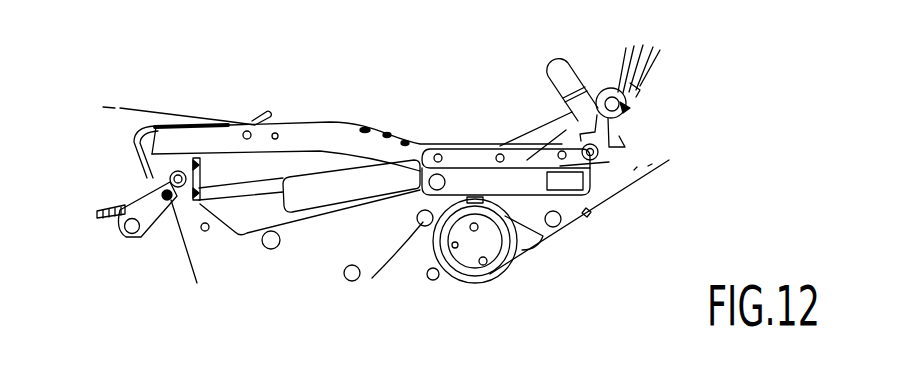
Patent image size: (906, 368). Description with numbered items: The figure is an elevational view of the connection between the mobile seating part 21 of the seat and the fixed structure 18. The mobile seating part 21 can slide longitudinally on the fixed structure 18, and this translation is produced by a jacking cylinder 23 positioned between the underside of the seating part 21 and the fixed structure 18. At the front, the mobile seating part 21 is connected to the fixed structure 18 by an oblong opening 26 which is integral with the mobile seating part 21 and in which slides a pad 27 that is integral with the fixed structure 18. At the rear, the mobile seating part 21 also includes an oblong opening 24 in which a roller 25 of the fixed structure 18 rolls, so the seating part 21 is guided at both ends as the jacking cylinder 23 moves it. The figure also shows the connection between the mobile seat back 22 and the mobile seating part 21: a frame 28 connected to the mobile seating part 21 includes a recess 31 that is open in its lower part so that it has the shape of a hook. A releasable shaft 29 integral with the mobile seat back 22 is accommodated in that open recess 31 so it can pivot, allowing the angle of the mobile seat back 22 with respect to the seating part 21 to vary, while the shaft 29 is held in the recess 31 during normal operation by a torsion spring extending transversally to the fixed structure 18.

The fixed structure 18 is at (627, 172).
The mobile seating part 21 is at (310, 135).
The mobile seat back 22 is at (647, 64).
The jacking cylinder 23 is at (314, 198).
The oblong opening 24 is at (608, 194).
The roller 25 is at (440, 153).
The oblong opening 26 is at (156, 200).
The pad 27 is at (147, 177).
The frame 28 is at (522, 162).
The releasable shaft 29 is at (642, 110).
The recess 31 is at (604, 90).